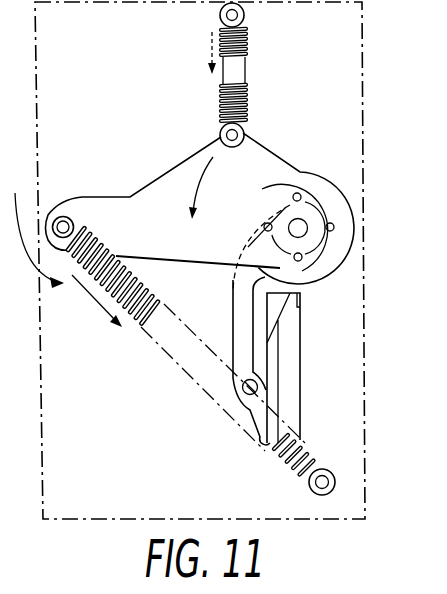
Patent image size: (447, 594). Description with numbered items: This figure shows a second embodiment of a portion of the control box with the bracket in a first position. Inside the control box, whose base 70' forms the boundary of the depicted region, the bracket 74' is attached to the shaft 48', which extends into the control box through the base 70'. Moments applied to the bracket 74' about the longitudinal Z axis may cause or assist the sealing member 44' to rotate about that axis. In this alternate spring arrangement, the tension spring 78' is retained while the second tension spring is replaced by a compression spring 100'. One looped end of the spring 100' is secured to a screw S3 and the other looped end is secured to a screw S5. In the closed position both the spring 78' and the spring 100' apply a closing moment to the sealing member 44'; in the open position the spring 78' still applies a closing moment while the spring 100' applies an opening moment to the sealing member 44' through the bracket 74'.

The screw S5 is at (248, 14).
The screw S3 is at (221, 133).
The compression spring 100' is at (263, 76).
The bracket 74' is at (200, 205).
The shaft 48' is at (284, 220).
The tension spring 78' is at (187, 339).
The sealing member 44' is at (293, 386).
The base 70' is at (223, 260).